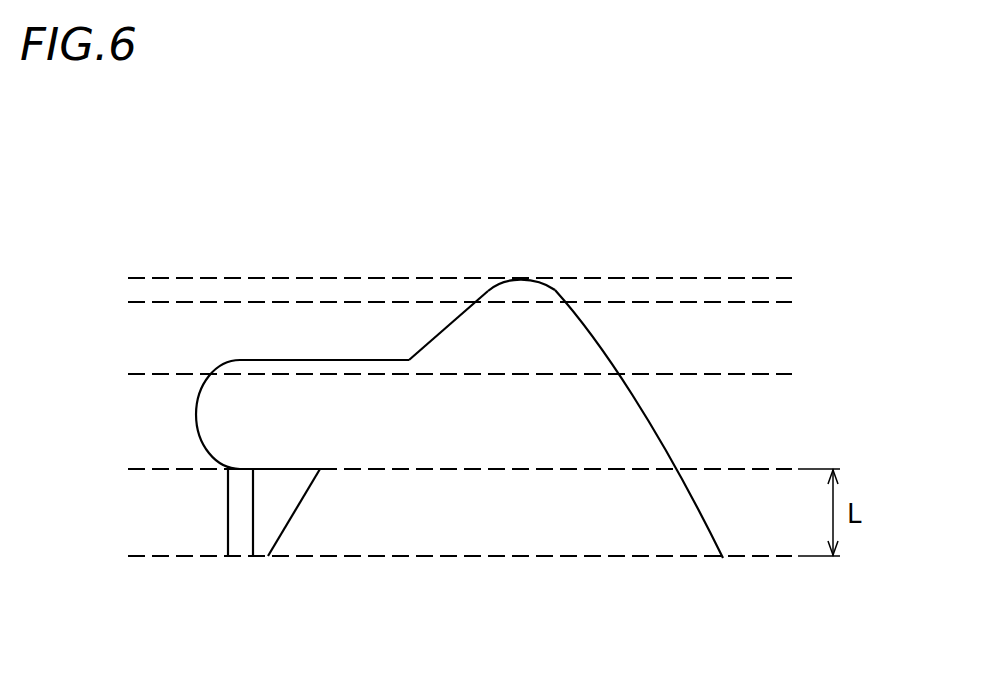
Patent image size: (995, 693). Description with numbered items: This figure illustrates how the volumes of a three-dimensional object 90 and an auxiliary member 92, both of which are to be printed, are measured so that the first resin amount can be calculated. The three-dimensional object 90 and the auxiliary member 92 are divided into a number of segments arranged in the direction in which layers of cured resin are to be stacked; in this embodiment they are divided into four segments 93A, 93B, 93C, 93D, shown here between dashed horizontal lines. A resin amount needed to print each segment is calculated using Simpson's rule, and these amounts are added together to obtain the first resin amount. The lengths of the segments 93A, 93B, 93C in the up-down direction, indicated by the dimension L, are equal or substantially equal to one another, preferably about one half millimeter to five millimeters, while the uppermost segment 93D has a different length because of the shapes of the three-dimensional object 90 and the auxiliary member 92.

The three-dimensional object 90 is at (192, 414).
The auxiliary member 92 is at (224, 500).
The segment 93A is at (235, 513).
The segment 93B is at (543, 427).
The segment 93C is at (570, 352).
The segment 93D is at (517, 292).